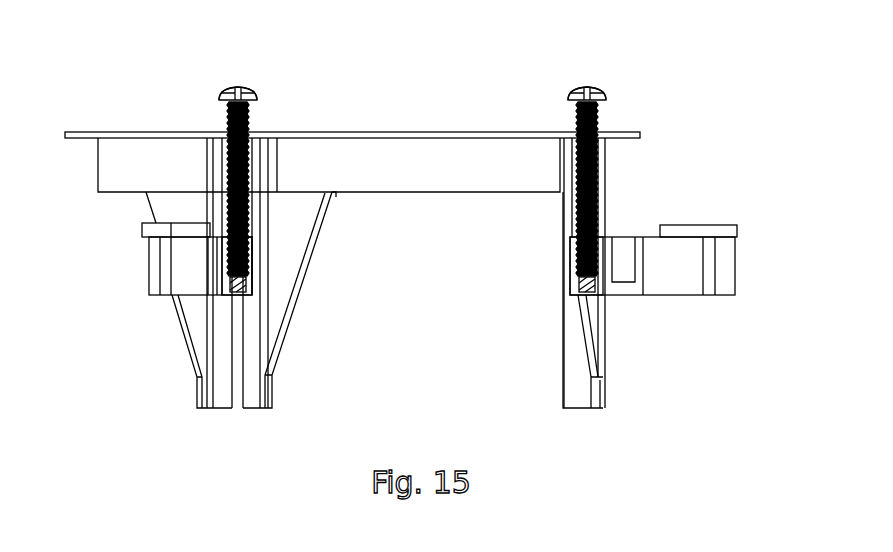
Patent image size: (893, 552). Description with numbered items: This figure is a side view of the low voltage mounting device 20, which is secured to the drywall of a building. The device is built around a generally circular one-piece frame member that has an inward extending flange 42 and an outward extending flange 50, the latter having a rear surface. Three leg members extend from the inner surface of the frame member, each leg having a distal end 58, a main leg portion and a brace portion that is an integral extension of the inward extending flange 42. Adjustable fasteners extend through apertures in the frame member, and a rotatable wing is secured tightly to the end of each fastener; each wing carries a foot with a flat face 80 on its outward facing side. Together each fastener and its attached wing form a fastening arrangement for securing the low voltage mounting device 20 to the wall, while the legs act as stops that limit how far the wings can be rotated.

The low voltage mounting device 20 is at (132, 101).
The inward extending flange 42 is at (395, 173).
The outward extending flange 50 is at (622, 140).
The distal end 58 is at (577, 410).
The flat face 80 is at (710, 225).